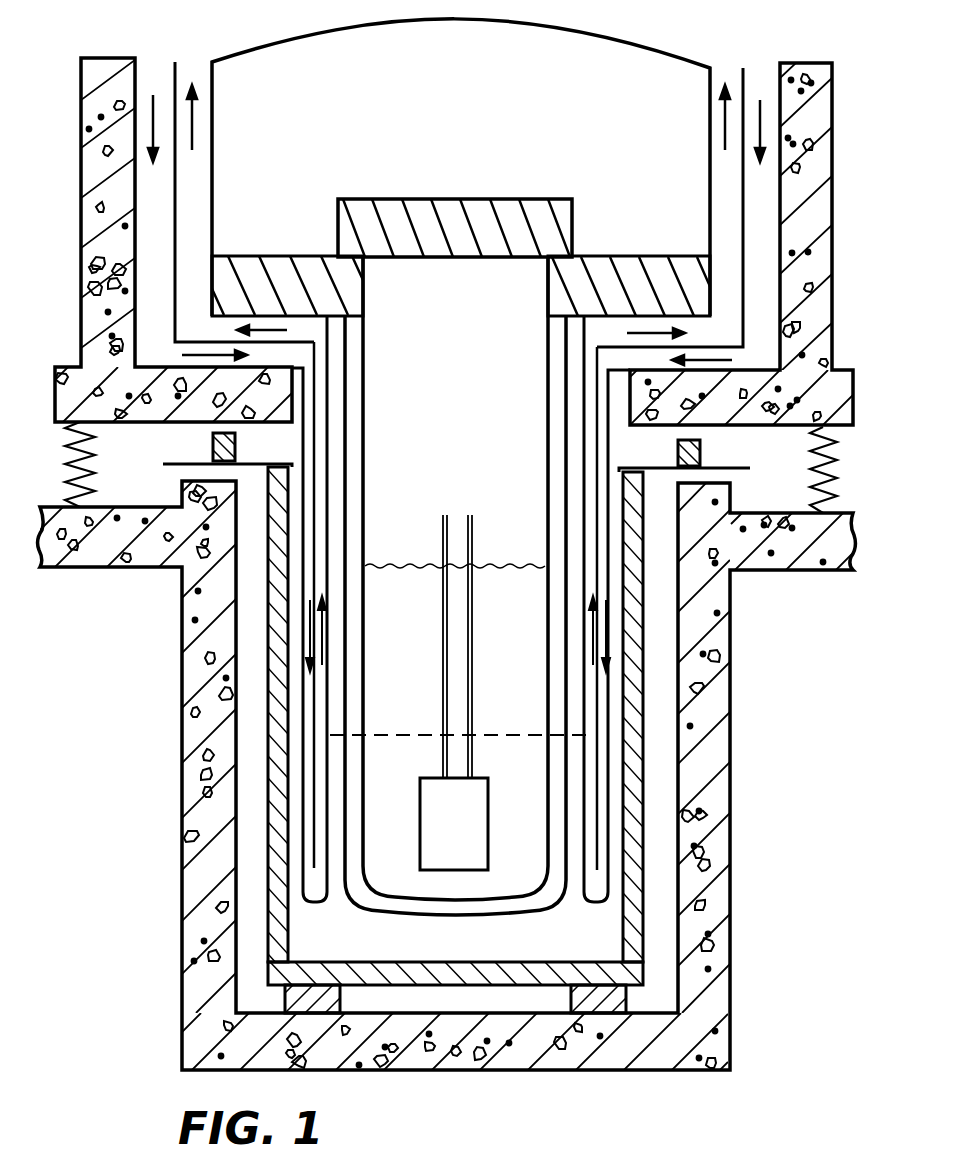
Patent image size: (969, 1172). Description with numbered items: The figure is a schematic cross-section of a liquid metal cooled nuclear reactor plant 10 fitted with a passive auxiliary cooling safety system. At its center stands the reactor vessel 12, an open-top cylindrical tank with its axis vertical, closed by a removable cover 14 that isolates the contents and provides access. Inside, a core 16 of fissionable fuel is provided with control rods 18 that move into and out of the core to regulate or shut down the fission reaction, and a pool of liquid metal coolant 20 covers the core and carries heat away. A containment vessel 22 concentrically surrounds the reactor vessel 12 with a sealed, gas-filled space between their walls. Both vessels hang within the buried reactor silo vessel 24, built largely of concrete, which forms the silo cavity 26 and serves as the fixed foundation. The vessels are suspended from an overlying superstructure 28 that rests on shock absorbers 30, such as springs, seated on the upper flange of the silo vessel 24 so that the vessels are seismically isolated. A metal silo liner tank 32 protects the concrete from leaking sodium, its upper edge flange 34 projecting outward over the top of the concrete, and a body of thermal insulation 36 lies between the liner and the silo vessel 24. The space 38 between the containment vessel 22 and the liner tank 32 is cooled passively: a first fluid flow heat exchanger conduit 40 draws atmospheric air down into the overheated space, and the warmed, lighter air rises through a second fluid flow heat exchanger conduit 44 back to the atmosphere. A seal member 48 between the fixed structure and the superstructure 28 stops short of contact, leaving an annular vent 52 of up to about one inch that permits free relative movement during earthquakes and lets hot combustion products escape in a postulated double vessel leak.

The liquid metal cooled nuclear reactor plant 10 is at (152, 649).
The reactor vessel 12 is at (365, 380).
The removable cover 14 is at (474, 198).
The core 16 is at (466, 828).
The control rods 18 is at (477, 666).
The liquid metal coolant 20 is at (404, 562).
The containment vessel 22 is at (348, 456).
The reactor silo vessel 24 is at (735, 680).
The silo cavity 26 is at (665, 782).
The superstructure 28 is at (818, 256).
The shock absorbers 30 is at (810, 480).
The silo liner tank 32 is at (623, 957).
The upper edge flange 34 is at (703, 466).
The thermal insulation 36 is at (647, 893).
The space 38 is at (292, 890).
The first fluid flow heat exchanger conduit 40 is at (148, 70).
The second fluid flow heat exchanger conduit 44 is at (205, 72).
The seal member 48 is at (212, 446).
The annular vent 52 is at (232, 424).